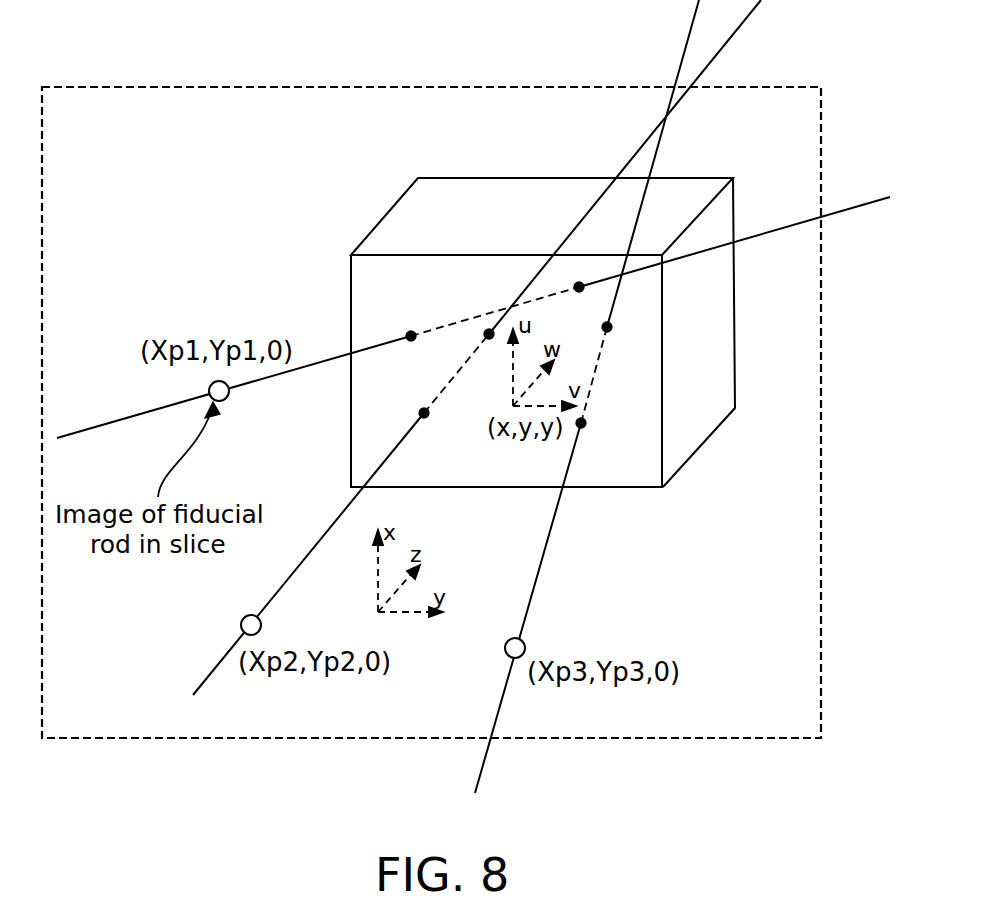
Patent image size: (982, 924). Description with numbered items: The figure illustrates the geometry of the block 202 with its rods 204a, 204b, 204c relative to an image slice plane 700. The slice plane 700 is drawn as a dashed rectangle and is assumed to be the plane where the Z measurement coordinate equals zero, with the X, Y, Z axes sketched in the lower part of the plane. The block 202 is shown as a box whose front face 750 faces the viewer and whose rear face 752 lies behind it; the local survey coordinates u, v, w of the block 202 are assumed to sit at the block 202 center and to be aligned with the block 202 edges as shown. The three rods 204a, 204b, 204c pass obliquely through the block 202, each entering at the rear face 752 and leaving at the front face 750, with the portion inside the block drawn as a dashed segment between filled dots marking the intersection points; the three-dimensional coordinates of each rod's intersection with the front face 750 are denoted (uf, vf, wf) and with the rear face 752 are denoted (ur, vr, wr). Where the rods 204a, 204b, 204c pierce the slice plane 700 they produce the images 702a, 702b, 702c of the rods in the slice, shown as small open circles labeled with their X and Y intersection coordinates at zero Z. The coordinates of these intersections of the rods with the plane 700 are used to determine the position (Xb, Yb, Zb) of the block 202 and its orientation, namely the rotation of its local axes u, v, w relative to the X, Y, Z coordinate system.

The image slice plane 700 is at (368, 87).
The rear face 752 is at (473, 195).
The front face 750 is at (362, 290).
The block 202 is at (735, 363).
The rod 204a is at (101, 425).
The rod 204b is at (318, 540).
The rod 204c is at (548, 550).
The image of rod 702a is at (231, 393).
The image of rod 702b is at (241, 620).
The image of rod 702c is at (526, 645).